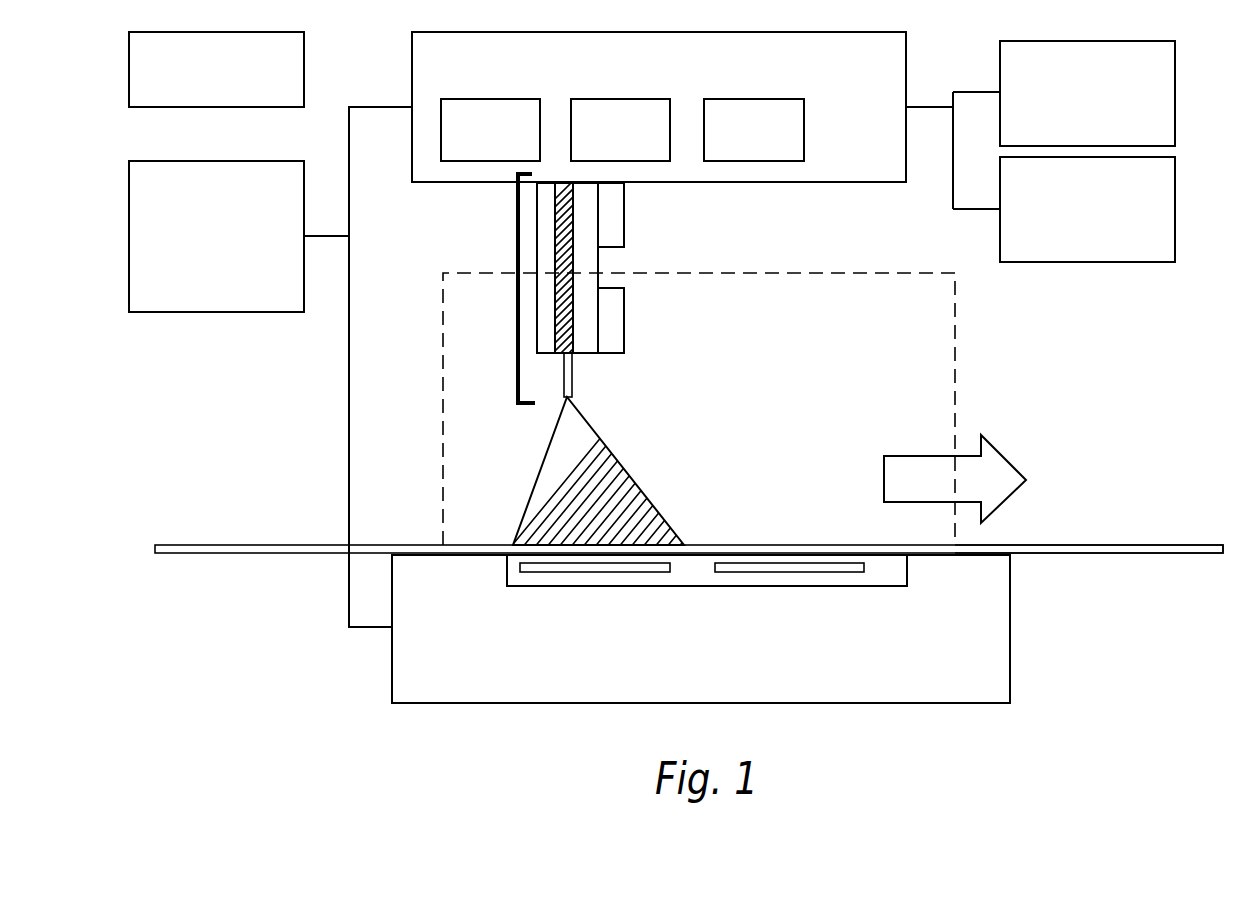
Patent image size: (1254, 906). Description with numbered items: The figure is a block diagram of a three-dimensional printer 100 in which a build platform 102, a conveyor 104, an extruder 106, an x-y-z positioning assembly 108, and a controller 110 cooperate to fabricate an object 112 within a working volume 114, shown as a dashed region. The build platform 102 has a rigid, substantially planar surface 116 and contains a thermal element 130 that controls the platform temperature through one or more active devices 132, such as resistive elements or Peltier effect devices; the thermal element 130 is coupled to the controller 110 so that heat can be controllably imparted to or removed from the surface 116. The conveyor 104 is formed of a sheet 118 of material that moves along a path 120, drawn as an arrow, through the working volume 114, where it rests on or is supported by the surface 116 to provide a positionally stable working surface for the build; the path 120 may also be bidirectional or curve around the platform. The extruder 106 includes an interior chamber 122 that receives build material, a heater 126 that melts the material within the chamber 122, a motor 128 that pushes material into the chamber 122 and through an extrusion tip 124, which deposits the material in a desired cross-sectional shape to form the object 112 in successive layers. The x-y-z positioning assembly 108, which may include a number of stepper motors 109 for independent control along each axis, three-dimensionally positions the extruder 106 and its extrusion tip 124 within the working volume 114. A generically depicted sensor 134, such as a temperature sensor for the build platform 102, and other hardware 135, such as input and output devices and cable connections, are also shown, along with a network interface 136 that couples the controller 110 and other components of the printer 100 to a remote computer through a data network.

The printer 100 is at (1158, 383).
The build platform 102 is at (701, 629).
The conveyor 104 is at (222, 545).
The extruder 106 is at (518, 238).
The x-y-z positioning assembly 108 is at (659, 107).
The stepper motors 109 is at (622, 130).
The controller 110 is at (216, 236).
The object 112 is at (618, 462).
The working volume 114 is at (955, 405).
The surface 116 is at (484, 562).
The sheet of material 118 is at (1052, 545).
The path 120 is at (955, 479).
The chamber 122 is at (550, 303).
The extrusion tip 124 is at (564, 373).
The heater 126 is at (624, 321).
The motor 128 is at (624, 214).
The thermal element 130 is at (660, 587).
The active devices 132 is at (810, 573).
The sensor 134 is at (1087, 93).
The other hardware 135 is at (1087, 209).
The network interface 136 is at (216, 69).